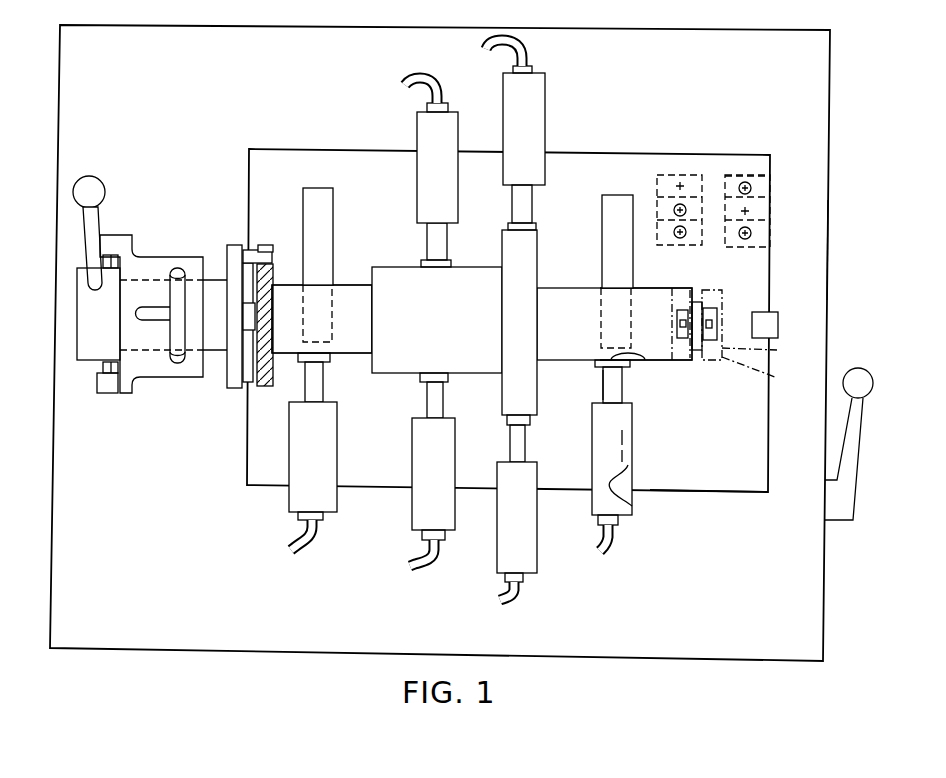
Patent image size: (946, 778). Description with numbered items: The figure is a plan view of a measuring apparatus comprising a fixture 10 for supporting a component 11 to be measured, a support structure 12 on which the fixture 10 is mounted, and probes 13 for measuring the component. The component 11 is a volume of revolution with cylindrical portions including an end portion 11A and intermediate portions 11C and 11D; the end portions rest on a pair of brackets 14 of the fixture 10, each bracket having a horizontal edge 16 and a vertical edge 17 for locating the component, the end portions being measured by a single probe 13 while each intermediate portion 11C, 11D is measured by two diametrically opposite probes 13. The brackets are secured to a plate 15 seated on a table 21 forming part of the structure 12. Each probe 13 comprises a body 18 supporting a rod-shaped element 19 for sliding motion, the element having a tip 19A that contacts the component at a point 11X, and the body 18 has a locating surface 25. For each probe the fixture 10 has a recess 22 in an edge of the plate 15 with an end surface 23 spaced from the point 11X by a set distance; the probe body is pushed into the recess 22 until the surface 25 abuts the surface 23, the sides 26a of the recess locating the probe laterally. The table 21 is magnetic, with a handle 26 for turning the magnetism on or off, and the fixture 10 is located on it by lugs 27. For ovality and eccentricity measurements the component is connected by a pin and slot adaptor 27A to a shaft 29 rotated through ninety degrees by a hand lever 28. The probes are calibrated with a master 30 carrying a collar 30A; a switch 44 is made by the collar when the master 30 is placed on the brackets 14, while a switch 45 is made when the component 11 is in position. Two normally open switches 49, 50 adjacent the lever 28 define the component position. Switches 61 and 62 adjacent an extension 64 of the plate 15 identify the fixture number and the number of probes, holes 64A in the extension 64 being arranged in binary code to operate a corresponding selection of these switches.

The fixture 10 is at (632, 153).
The component 11 is at (563, 284).
The end portion of the component 11A is at (346, 284).
The intermediate portion of the component 11C is at (392, 375).
The intermediate portion of the component 11D is at (533, 387).
The point on the component 11X is at (645, 362).
The support structure 12 is at (817, 152).
The probe 13 is at (508, 138).
The bracket 14 is at (336, 194).
The plate 15 is at (733, 490).
The horizontal edge 16 is at (620, 303).
The vertical edge 17 is at (600, 298).
The probe body 18 is at (632, 455).
The rod-shaped element 19 is at (625, 382).
The tip 19A is at (627, 373).
The table 21 is at (818, 272).
The recess 22 is at (548, 165).
The end surface 23 is at (507, 187).
The locating surface 25 is at (537, 187).
The handle 26 is at (873, 385).
The sides of the recess 26a is at (633, 437).
The lug 27 is at (247, 318).
The pin and slot adaptor 27A is at (250, 248).
The hand lever 28 is at (104, 182).
The shaft 29 is at (218, 262).
The master 30 is at (765, 352).
The collar 30A is at (772, 375).
The switch 44 is at (676, 315).
The switch 45 is at (713, 308).
The switch 49 is at (103, 396).
The switch 50 is at (107, 236).
The switch 61 is at (750, 170).
The switch 62 is at (682, 170).
The extension 64 is at (723, 163).
The holes 64A is at (752, 233).